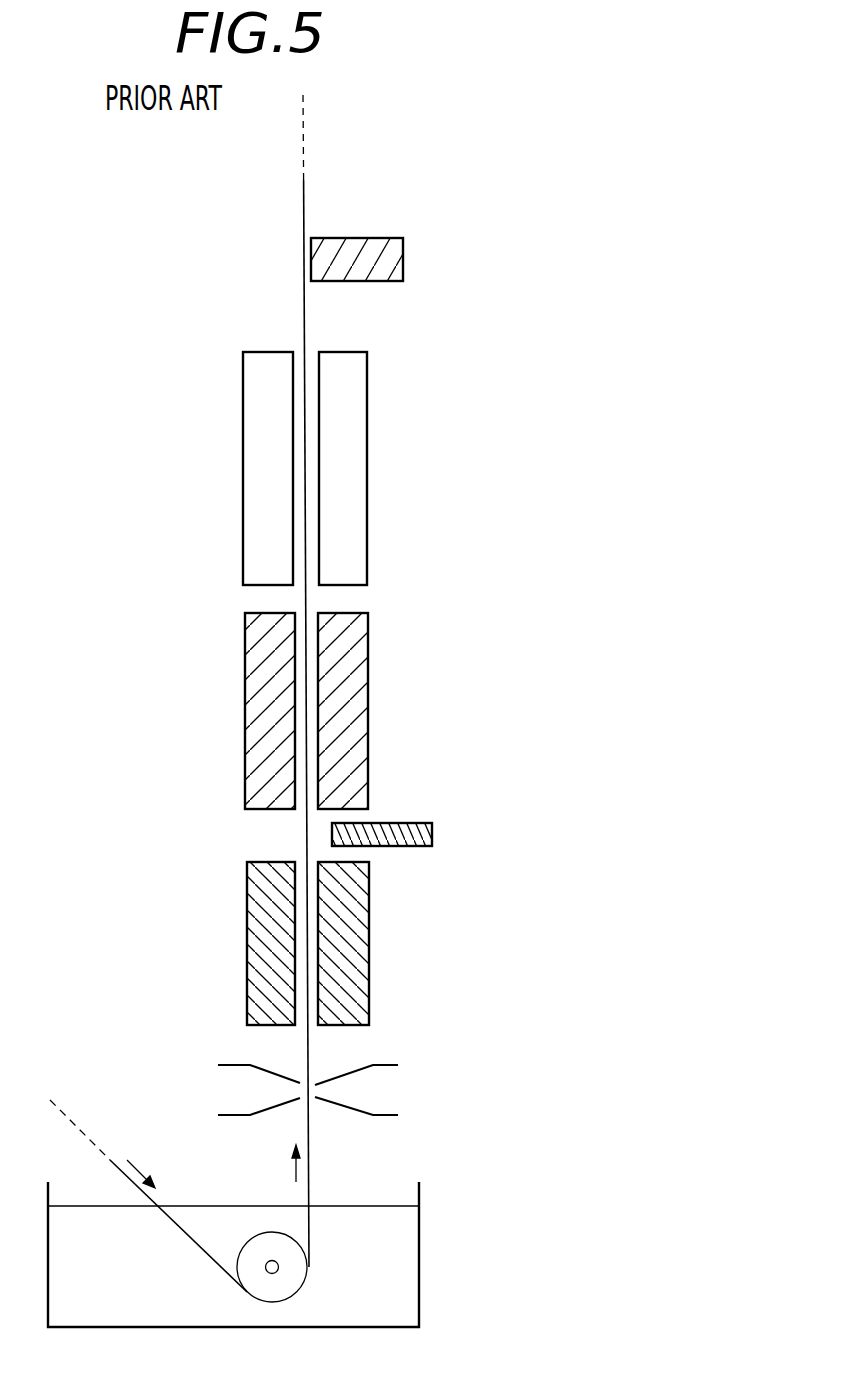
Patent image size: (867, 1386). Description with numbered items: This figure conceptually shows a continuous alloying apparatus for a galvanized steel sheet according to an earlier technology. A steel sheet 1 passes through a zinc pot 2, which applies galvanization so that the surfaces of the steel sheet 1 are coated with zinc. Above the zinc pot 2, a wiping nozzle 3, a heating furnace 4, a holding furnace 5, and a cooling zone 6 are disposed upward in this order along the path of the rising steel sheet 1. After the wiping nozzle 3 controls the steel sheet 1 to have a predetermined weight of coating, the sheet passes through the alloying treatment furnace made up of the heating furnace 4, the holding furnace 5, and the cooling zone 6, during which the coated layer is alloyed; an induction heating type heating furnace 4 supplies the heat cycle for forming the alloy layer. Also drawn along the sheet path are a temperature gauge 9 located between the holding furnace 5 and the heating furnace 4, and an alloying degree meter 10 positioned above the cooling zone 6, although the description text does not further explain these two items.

The steel sheet 1 is at (309, 1168).
The zinc pot 2 is at (419, 1266).
The wiping nozzle 3 is at (388, 1090).
The heating furnace 4 is at (369, 957).
The holding furnace 5 is at (368, 693).
The cooling zone 6 is at (367, 448).
The temperature gauge 9 is at (420, 823).
The alloying degree meter 10 is at (403, 249).